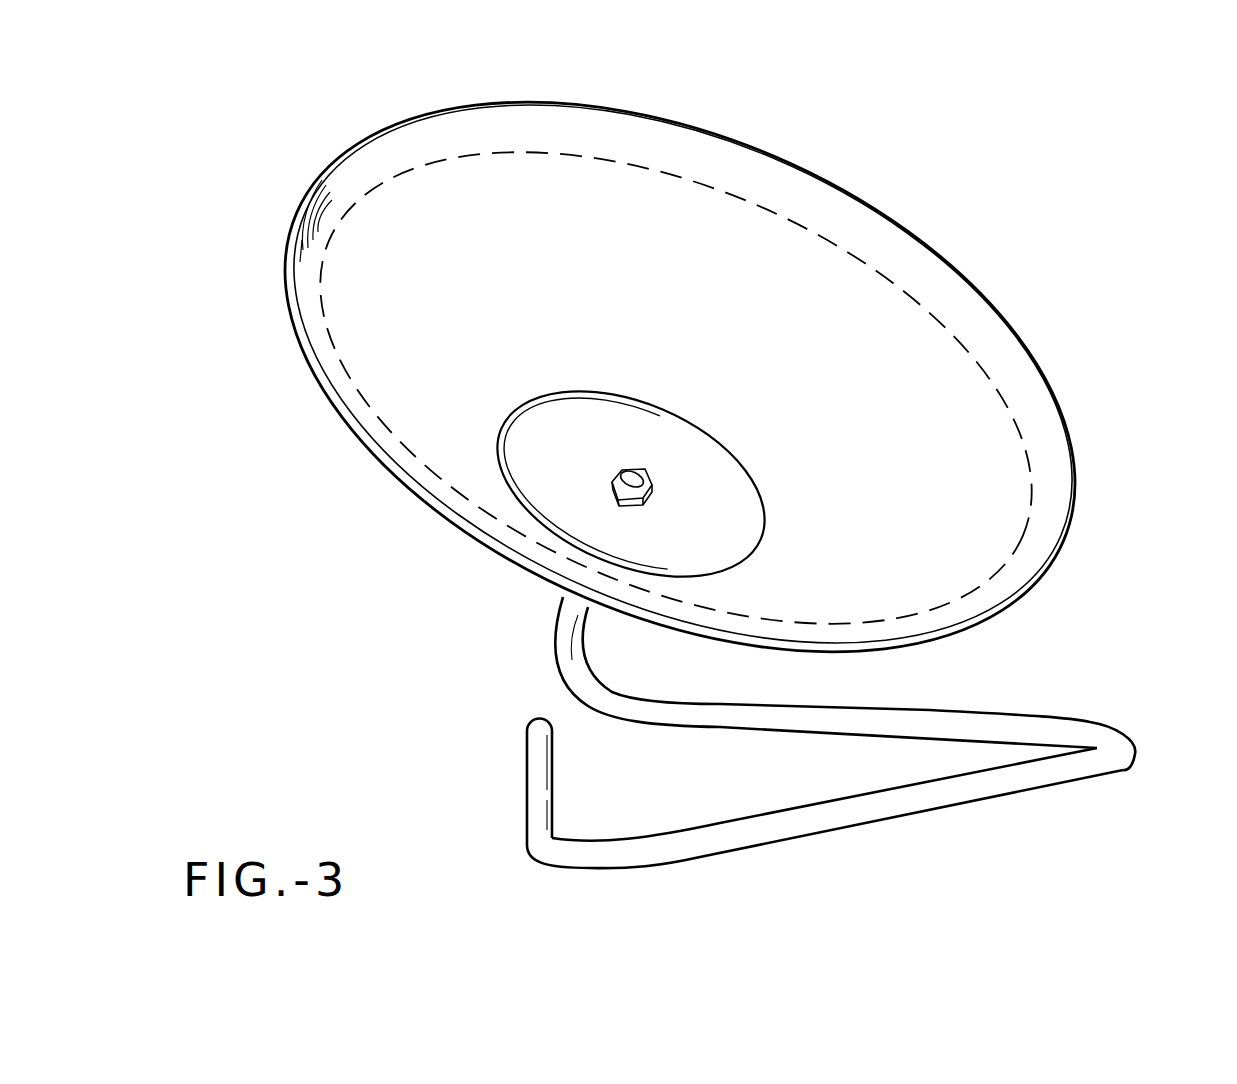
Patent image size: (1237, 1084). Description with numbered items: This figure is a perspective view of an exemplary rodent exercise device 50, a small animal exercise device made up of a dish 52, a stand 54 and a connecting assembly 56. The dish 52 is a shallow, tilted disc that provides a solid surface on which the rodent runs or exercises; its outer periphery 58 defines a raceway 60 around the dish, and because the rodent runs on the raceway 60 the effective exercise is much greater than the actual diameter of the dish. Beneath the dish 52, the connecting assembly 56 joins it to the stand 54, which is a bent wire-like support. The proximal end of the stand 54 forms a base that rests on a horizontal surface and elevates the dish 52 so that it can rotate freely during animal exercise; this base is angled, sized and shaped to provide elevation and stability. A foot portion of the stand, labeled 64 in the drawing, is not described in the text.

The rodent exercise device 50 is at (1118, 443).
The dish 52 is at (1008, 600).
The stand 54 is at (850, 822).
The connecting assembly 56 is at (530, 608).
The outer periphery 58 is at (297, 322).
The raceway 60 is at (370, 178).
The foot 64 is at (576, 868).